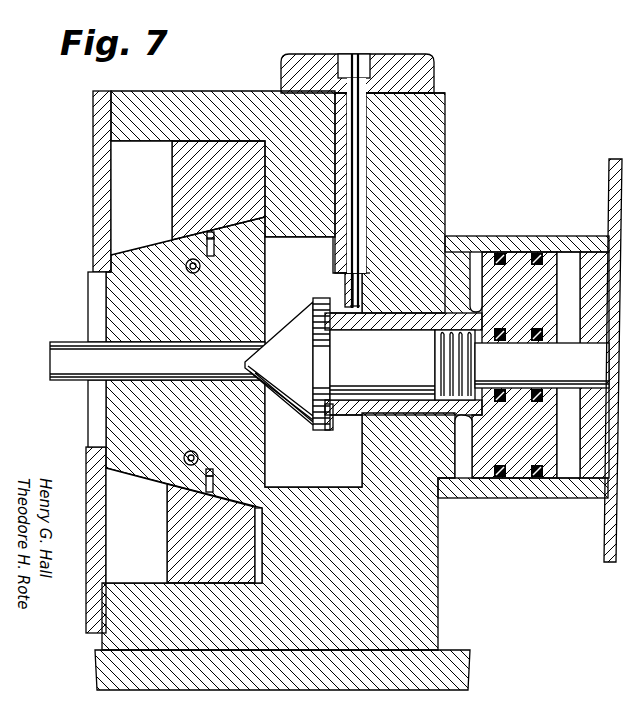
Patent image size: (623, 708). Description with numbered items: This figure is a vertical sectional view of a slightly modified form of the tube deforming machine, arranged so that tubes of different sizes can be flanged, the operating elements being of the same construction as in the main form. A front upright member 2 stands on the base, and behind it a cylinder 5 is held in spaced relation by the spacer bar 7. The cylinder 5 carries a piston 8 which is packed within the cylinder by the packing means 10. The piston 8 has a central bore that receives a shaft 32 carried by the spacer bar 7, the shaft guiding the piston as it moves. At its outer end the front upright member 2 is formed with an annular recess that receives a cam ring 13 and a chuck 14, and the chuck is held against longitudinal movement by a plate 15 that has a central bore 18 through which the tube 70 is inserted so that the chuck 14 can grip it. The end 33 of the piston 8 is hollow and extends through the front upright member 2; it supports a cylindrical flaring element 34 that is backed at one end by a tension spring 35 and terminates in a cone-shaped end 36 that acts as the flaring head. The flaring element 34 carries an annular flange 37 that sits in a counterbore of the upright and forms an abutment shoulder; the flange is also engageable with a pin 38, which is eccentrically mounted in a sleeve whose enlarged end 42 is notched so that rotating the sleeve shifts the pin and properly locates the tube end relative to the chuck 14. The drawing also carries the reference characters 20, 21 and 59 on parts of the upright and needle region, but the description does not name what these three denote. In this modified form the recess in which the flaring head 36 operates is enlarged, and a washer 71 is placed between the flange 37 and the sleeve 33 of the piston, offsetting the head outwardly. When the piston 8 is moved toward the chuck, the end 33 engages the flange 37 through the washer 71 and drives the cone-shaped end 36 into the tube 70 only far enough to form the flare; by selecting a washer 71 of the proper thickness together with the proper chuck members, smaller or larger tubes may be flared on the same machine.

The front upright member 2 is at (445, 133).
The cylinder 5 is at (561, 246).
The spacer bar 7 is at (606, 534).
The piston 8 is at (509, 275).
The packing means 10 is at (518, 476).
The cam ring 13 is at (185, 165).
The chuck 14 is at (118, 298).
The plate 15 is at (93, 183).
The central bore 18 is at (92, 425).
The chamber 20 is at (268, 248).
The pin hole 21 is at (186, 264).
The shaft 32 is at (572, 372).
The end of the piston 33 is at (420, 314).
The flaring element 34 is at (380, 366).
The tension spring 35 is at (465, 357).
The cone-shaped end 36 is at (296, 330).
The annular flange 37 is at (313, 430).
The pin 38 is at (358, 156).
The enlarged end of the sleeve 42 is at (434, 76).
The needle guide sleeve 59 is at (370, 208).
The tube 70 is at (55, 361).
The washer 71 is at (333, 415).